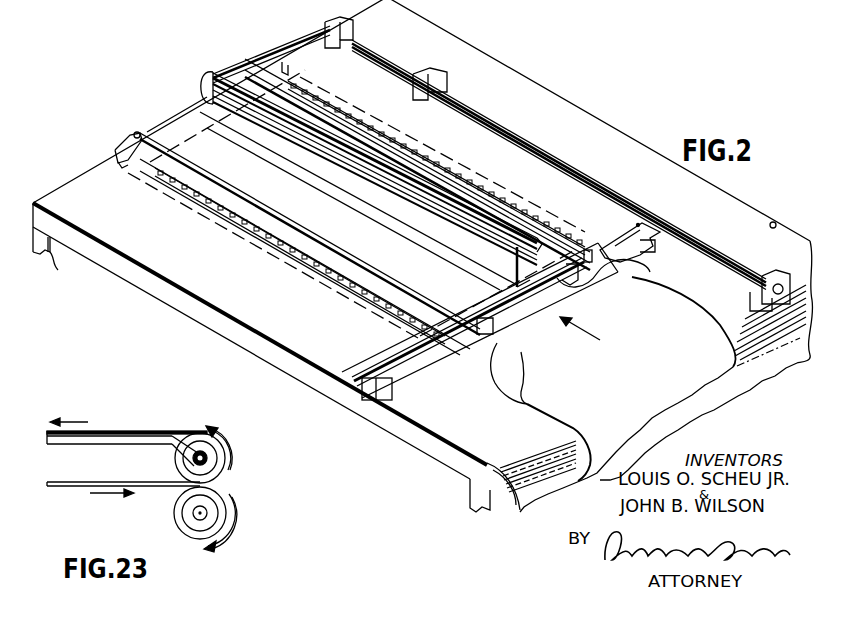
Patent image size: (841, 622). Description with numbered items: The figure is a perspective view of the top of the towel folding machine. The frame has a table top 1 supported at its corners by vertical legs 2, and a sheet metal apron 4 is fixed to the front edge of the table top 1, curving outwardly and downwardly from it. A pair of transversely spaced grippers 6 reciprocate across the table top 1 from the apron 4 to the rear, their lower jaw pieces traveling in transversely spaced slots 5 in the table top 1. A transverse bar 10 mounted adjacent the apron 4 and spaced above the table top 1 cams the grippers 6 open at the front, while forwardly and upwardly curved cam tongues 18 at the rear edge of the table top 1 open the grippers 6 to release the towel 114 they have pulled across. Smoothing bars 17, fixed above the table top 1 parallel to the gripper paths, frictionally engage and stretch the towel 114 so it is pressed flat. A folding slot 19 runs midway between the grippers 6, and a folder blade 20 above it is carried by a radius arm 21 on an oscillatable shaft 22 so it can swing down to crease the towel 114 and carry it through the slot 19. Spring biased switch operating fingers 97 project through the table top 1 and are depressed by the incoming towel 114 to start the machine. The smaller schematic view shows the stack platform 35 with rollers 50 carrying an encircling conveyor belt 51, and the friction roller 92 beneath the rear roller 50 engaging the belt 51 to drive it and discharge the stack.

In FIG. 2, the table top 1 is at (238, 292).
In FIG. 2, the vertical legs 2 is at (58, 269).
In FIG. 2, the sheet metal apron 4 is at (752, 357).
In FIG. 2, the slots 5 is at (424, 166).
In FIG. 2, the grippers 6 is at (288, 68).
In FIG. 2, the transverse bar 10 is at (520, 314).
In FIG. 2, the smoothing bars 17 is at (320, 115).
In FIG. 2, the cam tongues 18 is at (124, 139).
In FIG. 2, the folding slot 19 is at (408, 232).
In FIG. 2, the folder blade 20 is at (378, 210).
In FIG. 2, the radius arm 21 is at (252, 66).
In FIG. 2, the oscillatable shaft 22 is at (560, 165).
In FIG. 2, the switch operating finger 97 is at (576, 266).
In FIG. 2, the towel 114 is at (238, 250).
In FIG. 23, the stack platform 35 is at (120, 442).
In FIG. 23, the rollers 50 is at (210, 431).
In FIG. 23, the conveyor belt 51 is at (116, 431).
In FIG. 23, the friction roller 92 is at (176, 526).